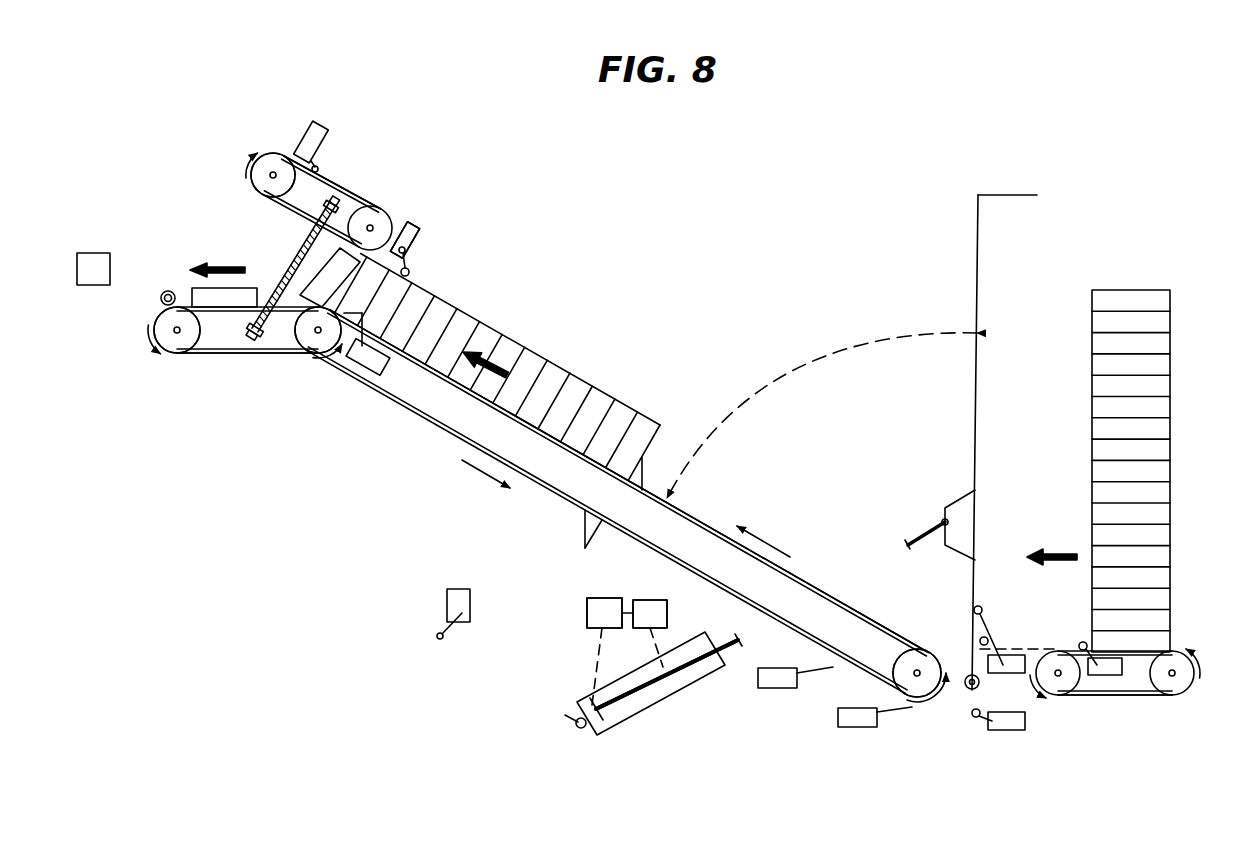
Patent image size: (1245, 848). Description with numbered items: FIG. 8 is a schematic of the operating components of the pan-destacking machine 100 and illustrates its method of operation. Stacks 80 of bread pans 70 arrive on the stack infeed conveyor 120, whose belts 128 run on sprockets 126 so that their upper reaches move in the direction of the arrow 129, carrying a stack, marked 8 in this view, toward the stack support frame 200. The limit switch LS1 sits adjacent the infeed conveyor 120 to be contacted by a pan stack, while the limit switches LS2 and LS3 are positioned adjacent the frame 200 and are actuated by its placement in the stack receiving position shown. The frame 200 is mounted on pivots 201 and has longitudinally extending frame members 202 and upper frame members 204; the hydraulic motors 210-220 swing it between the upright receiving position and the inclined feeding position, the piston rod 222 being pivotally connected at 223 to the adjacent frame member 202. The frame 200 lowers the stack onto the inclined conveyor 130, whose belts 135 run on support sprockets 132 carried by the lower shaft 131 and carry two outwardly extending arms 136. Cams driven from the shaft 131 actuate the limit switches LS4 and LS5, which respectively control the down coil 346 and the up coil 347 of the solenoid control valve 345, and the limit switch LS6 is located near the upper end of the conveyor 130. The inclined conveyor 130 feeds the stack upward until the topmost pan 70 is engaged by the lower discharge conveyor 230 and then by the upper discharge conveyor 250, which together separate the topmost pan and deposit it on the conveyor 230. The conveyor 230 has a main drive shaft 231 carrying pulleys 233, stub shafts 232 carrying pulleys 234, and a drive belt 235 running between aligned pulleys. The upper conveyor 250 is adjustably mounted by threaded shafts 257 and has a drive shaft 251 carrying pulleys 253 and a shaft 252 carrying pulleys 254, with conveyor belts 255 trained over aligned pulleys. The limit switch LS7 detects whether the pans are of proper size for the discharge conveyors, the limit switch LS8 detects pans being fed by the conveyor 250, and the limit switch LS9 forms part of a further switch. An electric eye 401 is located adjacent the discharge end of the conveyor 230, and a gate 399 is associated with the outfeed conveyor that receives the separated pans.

The machine 100 is at (212, 126).
The upper discharge conveyor 250 is at (343, 175).
The drive shaft 251 is at (264, 153).
The shaft 252 is at (377, 224).
The pulleys 253 is at (278, 160).
The pulleys 254 is at (414, 230).
The conveyor belts 255 is at (360, 197).
The threaded shafts 257 is at (293, 252).
The limit switch LS8 is at (328, 131).
The limit switch LS7 is at (419, 248).
The gate 399 is at (77, 265).
The electric eye 401 is at (163, 294).
The bread pans 70 is at (192, 290).
The lower discharge conveyor 230 is at (211, 362).
The main drive shaft 231 is at (177, 338).
The stub shafts 232 is at (318, 338).
The pulleys 233 is at (160, 320).
The pulleys 234 is at (327, 346).
The drive belt 235 is at (242, 354).
The limit switch LS6 is at (384, 364).
The stacks 80 is at (520, 325).
The inclined conveyor 130 is at (418, 436).
The lower shaft 131 is at (914, 674).
The support sprockets 132 is at (912, 660).
The belt 135 is at (828, 593).
The arms 136 is at (644, 470).
The limit switch LS9 is at (448, 602).
The solenoid control valve 345 is at (628, 594).
The down coil 346 is at (587, 612).
The up coil 347 is at (648, 600).
The piston rod 222 is at (735, 638).
The hydraulic motors 210-220 is at (637, 712).
The limit switch LS5 is at (780, 684).
The limit switch LS4 is at (862, 723).
The limit switch LS3 is at (1013, 730).
The limit switch LS2 is at (1007, 663).
The limit switch LS1 is at (1112, 676).
The stack support frame 200 is at (953, 370).
The pivots 201 is at (967, 690).
The longitudinal frame members 202 is at (975, 417).
The upper frame members 204 is at (1010, 193).
The pivotal connection 223 is at (944, 518).
The arrow 129 is at (1065, 553).
The stack of articles 8 is at (1178, 473).
The stack infeed conveyor 120 is at (1170, 713).
The sprockets 126 is at (1072, 692).
The belts 128 is at (1130, 697).